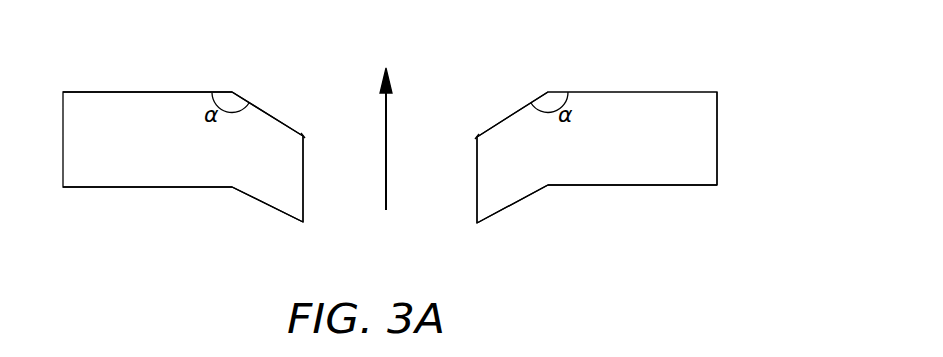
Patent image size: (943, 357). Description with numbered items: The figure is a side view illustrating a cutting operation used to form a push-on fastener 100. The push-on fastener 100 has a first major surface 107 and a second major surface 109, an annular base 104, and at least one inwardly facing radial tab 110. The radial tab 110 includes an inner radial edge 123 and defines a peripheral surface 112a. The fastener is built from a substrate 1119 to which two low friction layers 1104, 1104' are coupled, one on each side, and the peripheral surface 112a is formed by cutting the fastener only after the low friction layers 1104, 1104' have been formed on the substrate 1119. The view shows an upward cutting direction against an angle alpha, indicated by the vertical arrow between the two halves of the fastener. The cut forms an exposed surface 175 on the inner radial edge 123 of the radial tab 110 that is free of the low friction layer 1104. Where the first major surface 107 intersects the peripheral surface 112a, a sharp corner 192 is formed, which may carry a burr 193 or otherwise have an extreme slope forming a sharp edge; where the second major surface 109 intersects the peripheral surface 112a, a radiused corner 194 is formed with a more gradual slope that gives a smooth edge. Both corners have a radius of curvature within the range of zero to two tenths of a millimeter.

The push-on fastener 100 is at (790, 43).
The annular base 104 is at (110, 92).
The first major surface 107 is at (180, 92).
The second major surface 109 is at (135, 187).
The radial tab 110 is at (258, 109).
The burr 193 is at (303, 134).
The sharp corner 192 is at (304, 136).
The inner radial edge 123 is at (304, 160).
The peripheral surface 112a is at (304, 187).
The exposed surface 175 is at (304, 214).
The radiused corner 194 is at (304, 223).
The low friction layer 1104 is at (634, 144).
The substrate 1119 is at (717, 138).
The low friction layer 1104' is at (672, 170).